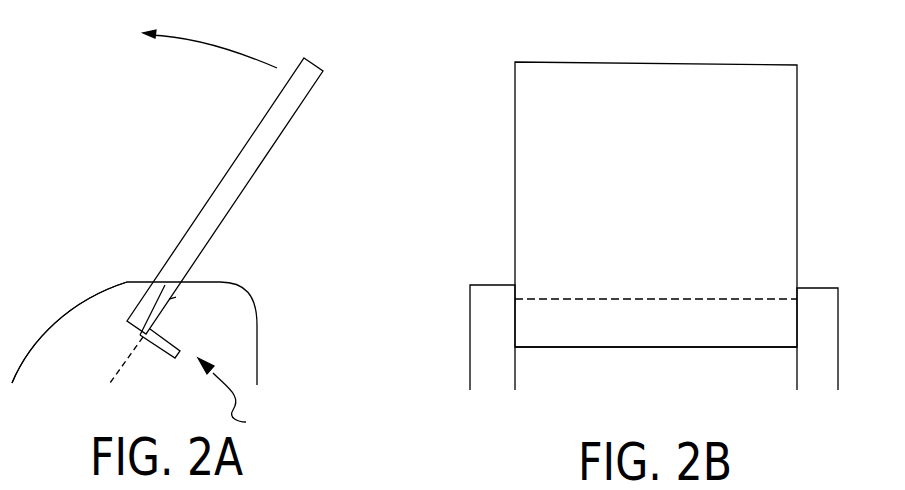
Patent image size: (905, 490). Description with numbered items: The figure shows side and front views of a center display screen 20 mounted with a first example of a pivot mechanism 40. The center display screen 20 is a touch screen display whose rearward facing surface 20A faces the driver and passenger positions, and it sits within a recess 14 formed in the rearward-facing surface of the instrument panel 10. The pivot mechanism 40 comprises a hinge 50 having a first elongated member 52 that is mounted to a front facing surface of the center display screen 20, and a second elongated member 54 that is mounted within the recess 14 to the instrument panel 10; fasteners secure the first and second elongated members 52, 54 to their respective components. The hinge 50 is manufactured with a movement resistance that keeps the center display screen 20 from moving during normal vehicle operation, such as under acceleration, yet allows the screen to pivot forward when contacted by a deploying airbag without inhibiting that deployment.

In FIG. 2A, the instrument panel 10 is at (190, 281).
In FIG. 2B, the instrument panel 10 is at (493, 285).
In FIG. 2A, the recess 14 is at (85, 325).
In FIG. 2B, the recess 14 is at (656, 365).
In FIG. 2A, the center display screen 20 is at (308, 75).
In FIG. 2B, the center display screen 20 is at (655, 60).
In FIG. 2B, the rearward facing surface 20A is at (656, 177).
In FIG. 2A, the pivot mechanism 40 is at (236, 397).
In FIG. 2A, the hinge 50 is at (178, 296).
In FIG. 2A, the first elongated member 52 is at (167, 320).
In FIG. 2B, the first elongated member 52 is at (598, 325).
In FIG. 2A, the second elongated member 54 is at (152, 358).